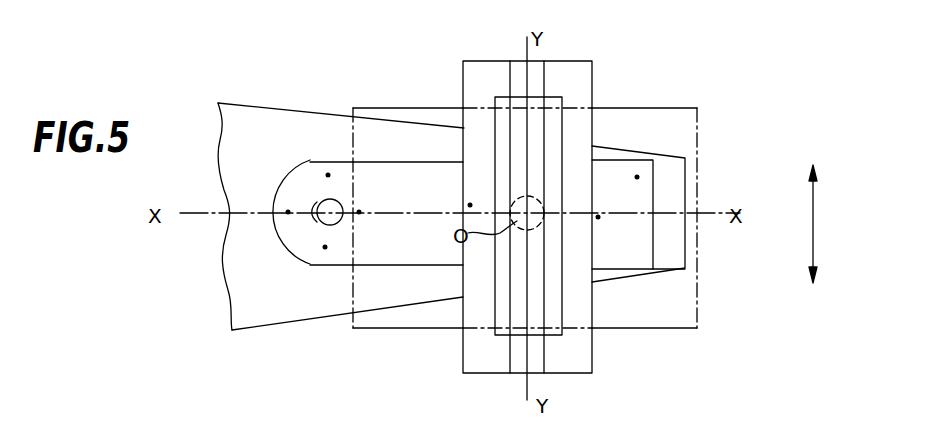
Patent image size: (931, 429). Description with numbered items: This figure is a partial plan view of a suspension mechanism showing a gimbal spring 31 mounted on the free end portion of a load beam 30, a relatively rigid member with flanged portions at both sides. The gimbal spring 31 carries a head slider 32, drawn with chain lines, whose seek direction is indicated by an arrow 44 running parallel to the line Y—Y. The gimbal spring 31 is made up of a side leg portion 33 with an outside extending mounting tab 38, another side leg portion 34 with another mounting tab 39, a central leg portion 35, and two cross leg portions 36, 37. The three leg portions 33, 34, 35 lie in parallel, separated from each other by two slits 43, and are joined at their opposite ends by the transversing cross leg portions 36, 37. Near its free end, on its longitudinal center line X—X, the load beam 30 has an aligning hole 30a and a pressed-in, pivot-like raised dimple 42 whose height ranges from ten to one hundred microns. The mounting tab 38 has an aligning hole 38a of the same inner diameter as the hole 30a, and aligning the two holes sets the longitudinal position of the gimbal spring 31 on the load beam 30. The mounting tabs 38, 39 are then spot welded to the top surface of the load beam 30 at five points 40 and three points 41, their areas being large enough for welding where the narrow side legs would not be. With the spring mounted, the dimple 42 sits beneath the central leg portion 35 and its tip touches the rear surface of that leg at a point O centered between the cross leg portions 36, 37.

The load beam 30 is at (298, 107).
The aligning hole 30a is at (317, 222).
The gimbal spring 31 is at (607, 72).
The head slider 32 is at (683, 104).
The side leg portion 33 is at (472, 128).
The side leg portion 34 is at (585, 122).
The central leg portion 35 is at (538, 127).
The cross leg portion 36 is at (500, 72).
The cross leg portion 37 is at (500, 353).
The mounting tab 38 is at (380, 162).
The aligning hole 38a is at (317, 202).
The mounting tab 39 is at (623, 262).
The welding points 40 is at (325, 247).
The welding points 41 is at (598, 216).
The dimple 42 is at (537, 228).
The slits 43 is at (497, 313).
The arrow 44 is at (812, 233).